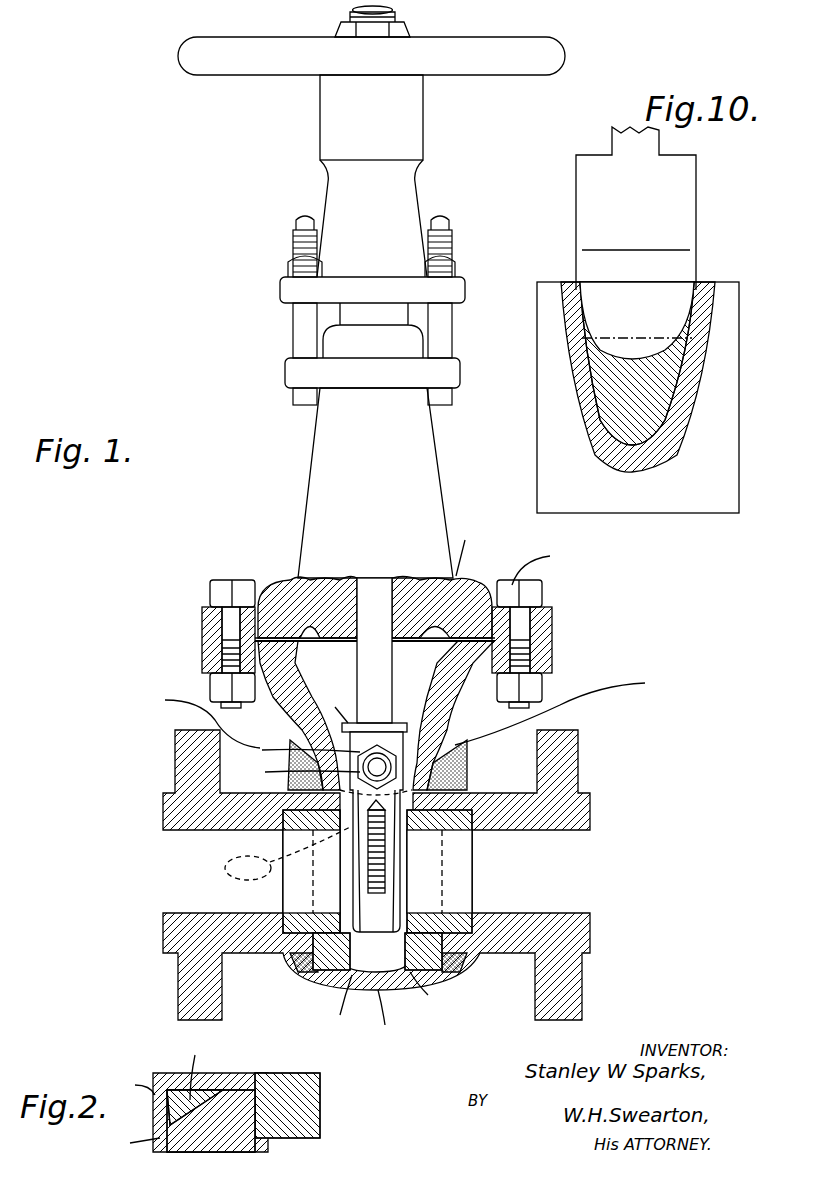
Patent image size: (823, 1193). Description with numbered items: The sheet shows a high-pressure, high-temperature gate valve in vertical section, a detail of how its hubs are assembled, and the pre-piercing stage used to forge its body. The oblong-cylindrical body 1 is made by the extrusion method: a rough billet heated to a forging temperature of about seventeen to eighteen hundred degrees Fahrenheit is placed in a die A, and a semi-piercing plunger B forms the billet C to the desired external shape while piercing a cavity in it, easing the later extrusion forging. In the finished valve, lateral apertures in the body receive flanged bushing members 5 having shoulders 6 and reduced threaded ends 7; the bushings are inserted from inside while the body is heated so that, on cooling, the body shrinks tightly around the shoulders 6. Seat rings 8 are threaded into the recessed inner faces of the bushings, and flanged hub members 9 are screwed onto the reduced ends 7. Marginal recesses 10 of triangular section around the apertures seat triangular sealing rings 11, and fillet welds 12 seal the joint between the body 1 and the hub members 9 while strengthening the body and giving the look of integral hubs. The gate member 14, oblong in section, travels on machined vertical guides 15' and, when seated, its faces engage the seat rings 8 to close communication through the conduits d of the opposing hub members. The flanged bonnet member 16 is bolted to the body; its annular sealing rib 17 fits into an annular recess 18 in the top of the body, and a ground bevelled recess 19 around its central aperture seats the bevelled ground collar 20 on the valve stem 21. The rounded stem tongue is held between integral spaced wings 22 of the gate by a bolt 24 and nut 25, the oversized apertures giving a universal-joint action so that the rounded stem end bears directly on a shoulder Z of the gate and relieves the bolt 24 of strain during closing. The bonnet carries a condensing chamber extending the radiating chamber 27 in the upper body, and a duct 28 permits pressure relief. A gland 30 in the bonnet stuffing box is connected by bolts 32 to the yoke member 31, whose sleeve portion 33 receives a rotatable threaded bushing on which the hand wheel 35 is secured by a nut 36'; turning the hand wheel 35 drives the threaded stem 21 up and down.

In FIG. 1, the valve body 1 is at (472, 735).
In FIG. 2, the valve body 1 is at (270, 1148).
In FIG. 1, the flanged bushing member 5 is at (325, 950).
In FIG. 2, the flanged bushing member 5 is at (300, 1110).
In FIG. 1, the shoulder 6 is at (322, 840).
In FIG. 1, the reduced threaded end 7 is at (305, 815).
In FIG. 2, the reduced threaded end 7 is at (162, 1088).
In FIG. 1, the seat ring 8 is at (380, 1004).
In FIG. 1, the hub member 9 is at (175, 985).
In FIG. 2, the hub member 9 is at (137, 1083).
In FIG. 2, the marginal recess 10 is at (130, 1145).
In FIG. 2, the sealing ring 11 is at (206, 1068).
In FIG. 1, the fillet weld 12 is at (286, 786).
In FIG. 1, the gate member 14 is at (376, 832).
In FIG. 1, the vertical guide 15' is at (402, 1020).
In FIG. 1, the bonnet member 16 is at (470, 600).
In FIG. 1, the annular sealing rib 17 is at (547, 558).
In FIG. 1, the annular recess 18 is at (226, 652).
In FIG. 1, the ground bevelled recess 19 is at (302, 582).
In FIG. 1, the bevelled ground collar 20 is at (333, 703).
In FIG. 1, the valve stem 21 is at (316, 729).
In FIG. 1, the spaced wings 22 is at (295, 745).
In FIG. 1, the bolt 24 is at (380, 765).
In FIG. 1, the nut 25 is at (296, 773).
In FIG. 1, the radiating chamber 27 is at (325, 666).
In FIG. 1, the duct 28 is at (472, 544).
In FIG. 1, the gland 30 is at (452, 292).
In FIG. 1, the yoke member 31 is at (372, 218).
In FIG. 1, the bolts 32 is at (305, 325).
In FIG. 1, the sleeve portion 33 is at (340, 124).
In FIG. 1, the hand wheel 35 is at (548, 60).
In FIG. 1, the nut 36' is at (407, 22).
In FIG. 1, the shoulder Z is at (405, 706).
In FIG. 1, the conduit d is at (192, 913).
In FIG. 10, the die A is at (698, 500).
In FIG. 10, the semi-piercing plunger B is at (697, 172).
In FIG. 10, the billet C is at (692, 340).